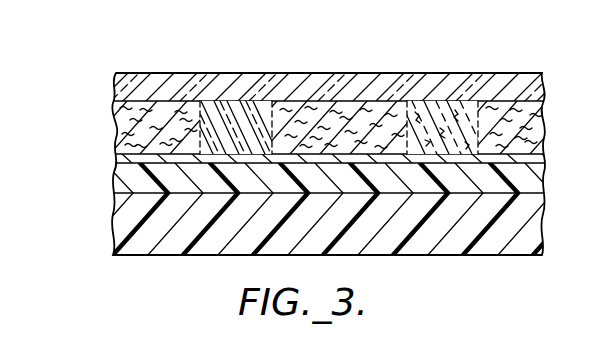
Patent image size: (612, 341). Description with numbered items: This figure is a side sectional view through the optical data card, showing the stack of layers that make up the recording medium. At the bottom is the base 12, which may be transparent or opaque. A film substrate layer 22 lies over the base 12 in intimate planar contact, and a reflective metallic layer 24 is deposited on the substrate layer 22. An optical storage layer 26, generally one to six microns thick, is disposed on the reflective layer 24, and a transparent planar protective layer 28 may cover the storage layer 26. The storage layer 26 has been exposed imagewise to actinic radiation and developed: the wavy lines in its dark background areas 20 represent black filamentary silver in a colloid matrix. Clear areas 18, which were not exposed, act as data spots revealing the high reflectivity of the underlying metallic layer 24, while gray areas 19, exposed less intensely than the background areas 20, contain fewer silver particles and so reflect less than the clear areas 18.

The base 12 is at (118, 228).
The film substrate layer 22 is at (127, 176).
The reflective metallic layer 24 is at (120, 157).
The optical storage layer 26 is at (114, 110).
The protective layer 28 is at (114, 88).
The clear areas 18 is at (231, 115).
The gray areas 19 is at (458, 113).
The dark background areas 20 is at (333, 113).